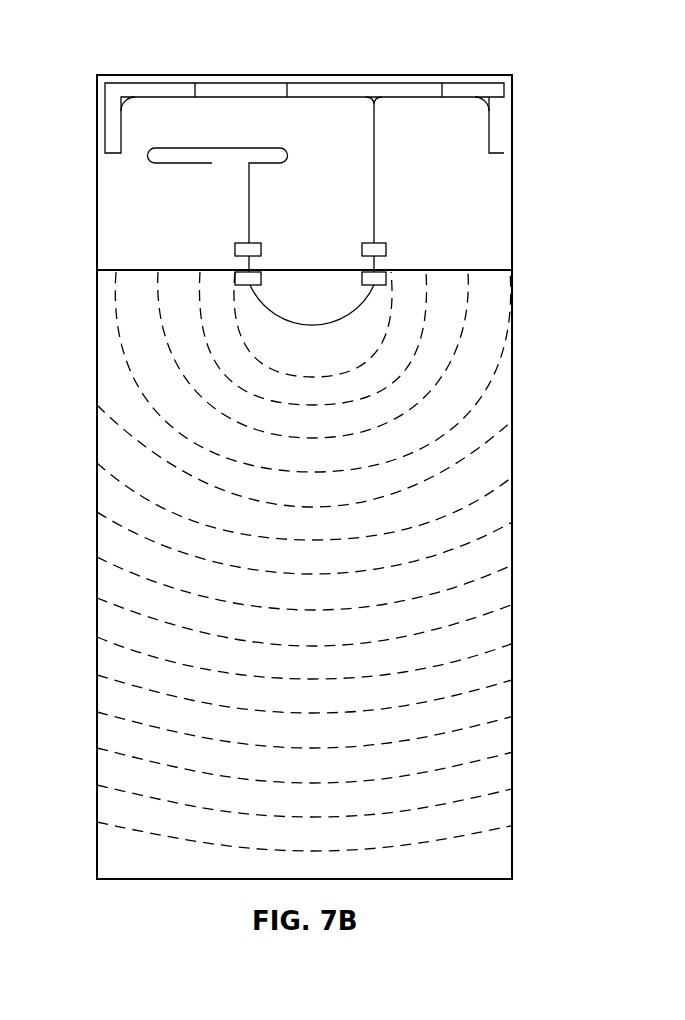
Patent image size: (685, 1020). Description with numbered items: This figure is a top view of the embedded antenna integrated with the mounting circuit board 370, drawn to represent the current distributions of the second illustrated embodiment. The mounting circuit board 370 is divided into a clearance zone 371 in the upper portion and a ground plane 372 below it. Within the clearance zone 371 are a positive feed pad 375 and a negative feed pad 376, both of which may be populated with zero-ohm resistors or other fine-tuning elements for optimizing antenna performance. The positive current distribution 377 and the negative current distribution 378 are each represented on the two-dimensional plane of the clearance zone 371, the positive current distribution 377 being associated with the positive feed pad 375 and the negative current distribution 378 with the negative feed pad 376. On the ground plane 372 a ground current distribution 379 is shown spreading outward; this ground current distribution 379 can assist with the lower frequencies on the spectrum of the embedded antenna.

The mounting circuit board 370 is at (583, 328).
The clearance zone 371 is at (513, 247).
The ground plane 372 is at (513, 583).
The positive feed pad 375 is at (233, 250).
The negative feed pad 376 is at (390, 249).
The positive current distribution 377 is at (145, 156).
The negative current distribution 378 is at (393, 93).
The ground current distribution 379 is at (385, 346).